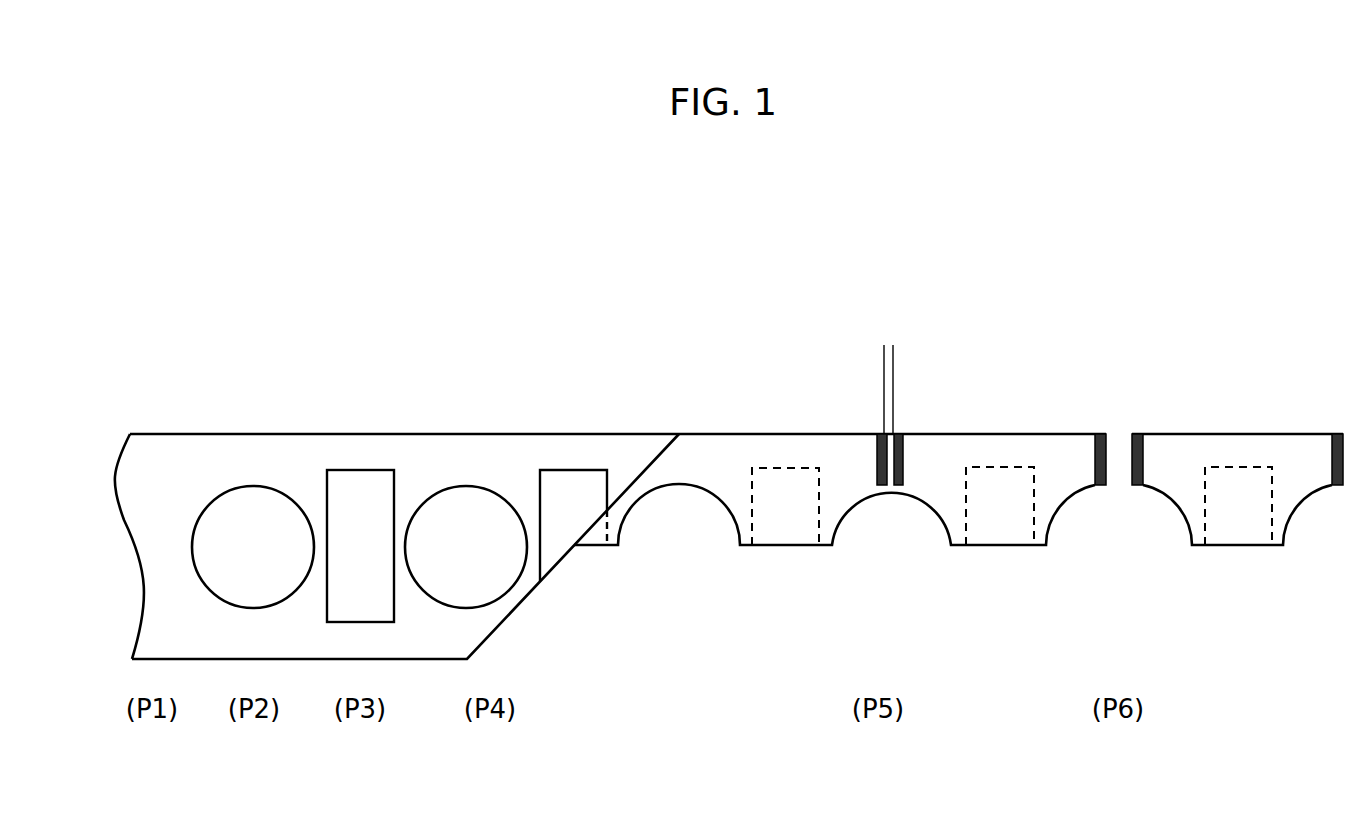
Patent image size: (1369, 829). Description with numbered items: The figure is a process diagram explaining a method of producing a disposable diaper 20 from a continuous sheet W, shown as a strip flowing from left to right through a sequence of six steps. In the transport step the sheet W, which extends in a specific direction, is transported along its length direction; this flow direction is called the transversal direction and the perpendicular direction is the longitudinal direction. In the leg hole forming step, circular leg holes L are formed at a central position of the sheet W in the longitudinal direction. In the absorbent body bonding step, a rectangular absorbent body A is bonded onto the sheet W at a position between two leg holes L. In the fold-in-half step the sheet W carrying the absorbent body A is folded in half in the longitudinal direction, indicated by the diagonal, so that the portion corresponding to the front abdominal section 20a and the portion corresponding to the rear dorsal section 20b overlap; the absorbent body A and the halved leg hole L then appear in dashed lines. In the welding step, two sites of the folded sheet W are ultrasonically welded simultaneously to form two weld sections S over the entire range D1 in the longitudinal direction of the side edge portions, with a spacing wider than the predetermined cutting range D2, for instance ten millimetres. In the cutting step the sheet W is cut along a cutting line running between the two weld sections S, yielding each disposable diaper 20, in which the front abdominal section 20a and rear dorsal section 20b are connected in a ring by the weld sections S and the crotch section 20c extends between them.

The sheet W is at (160, 452).
The absorbent body A is at (360, 485).
The leg hole L is at (205, 511).
The weld section S is at (881, 488).
The entire range in the longitudinal direction D1 is at (934, 517).
The cutting range D2 is at (850, 359).
The disposable diaper 20 is at (1237, 338).
The front abdominal section 20a is at (1287, 452).
The rear dorsal section 20b is at (1190, 452).
The crotch section 20c is at (1200, 548).